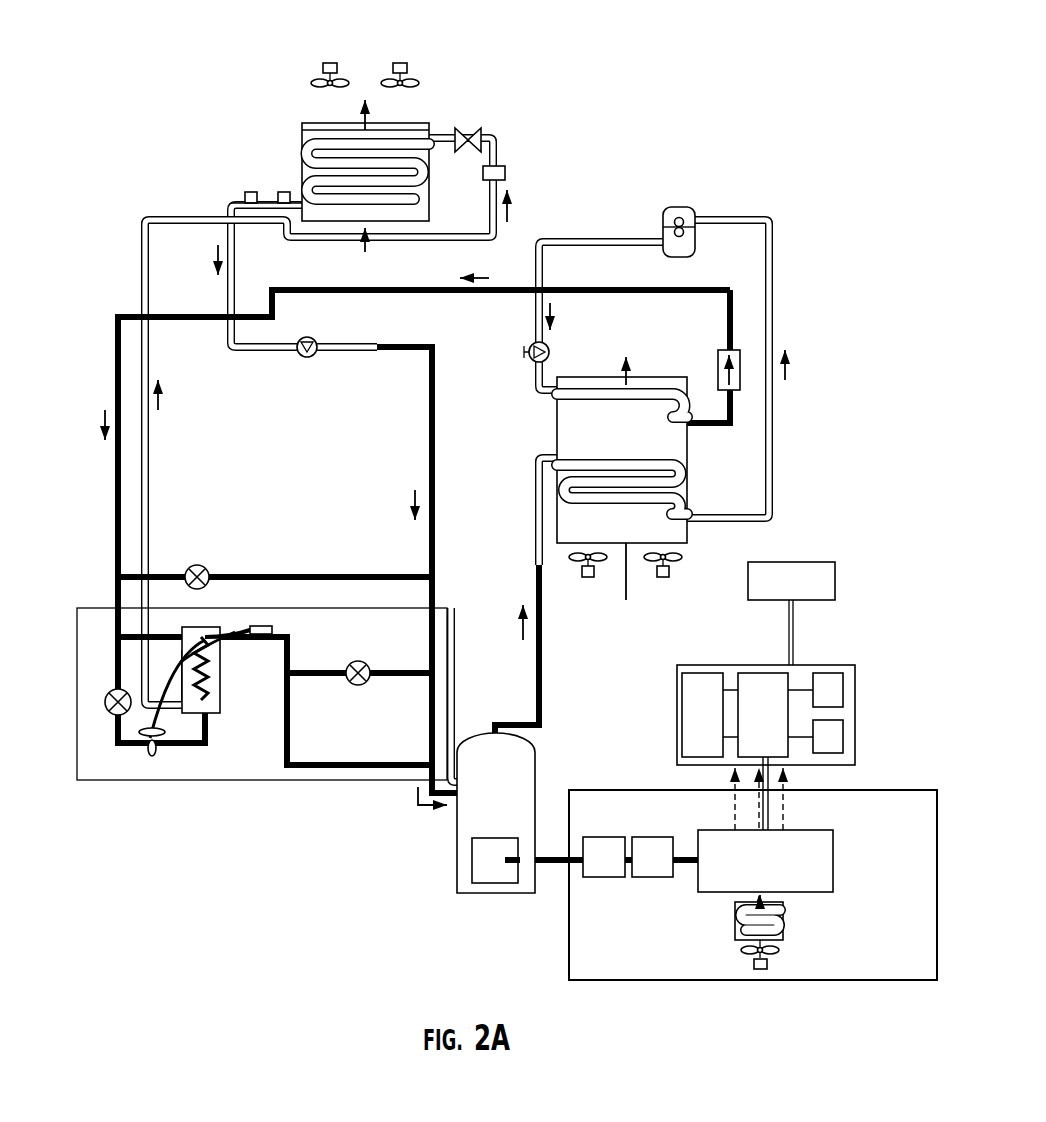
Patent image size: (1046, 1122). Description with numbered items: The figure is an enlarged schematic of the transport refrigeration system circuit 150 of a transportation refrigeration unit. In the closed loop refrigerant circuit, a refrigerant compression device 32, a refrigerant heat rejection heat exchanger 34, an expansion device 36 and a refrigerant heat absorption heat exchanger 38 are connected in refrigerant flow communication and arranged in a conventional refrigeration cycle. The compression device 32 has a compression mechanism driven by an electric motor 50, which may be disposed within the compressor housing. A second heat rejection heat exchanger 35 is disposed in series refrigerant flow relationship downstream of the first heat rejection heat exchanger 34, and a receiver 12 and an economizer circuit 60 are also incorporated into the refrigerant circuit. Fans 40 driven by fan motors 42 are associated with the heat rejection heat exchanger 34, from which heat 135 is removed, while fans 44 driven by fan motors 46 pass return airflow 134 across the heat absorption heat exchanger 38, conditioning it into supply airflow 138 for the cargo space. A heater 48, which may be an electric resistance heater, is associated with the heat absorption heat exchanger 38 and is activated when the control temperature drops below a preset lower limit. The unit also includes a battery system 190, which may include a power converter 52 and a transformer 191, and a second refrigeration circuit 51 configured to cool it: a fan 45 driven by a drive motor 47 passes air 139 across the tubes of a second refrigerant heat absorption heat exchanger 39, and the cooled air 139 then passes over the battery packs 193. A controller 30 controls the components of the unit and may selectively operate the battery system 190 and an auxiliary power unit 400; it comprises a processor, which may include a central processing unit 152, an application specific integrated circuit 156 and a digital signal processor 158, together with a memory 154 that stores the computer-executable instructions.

The receiver 12 is at (682, 207).
The controller 30 is at (858, 697).
The refrigerant compression device 32 is at (520, 768).
The refrigerant heat rejection heat exchanger 34 is at (672, 492).
The second heat rejection heat exchanger 35 is at (566, 405).
The expansion device 36 is at (469, 128).
The refrigerant heat absorption heat exchanger 38 is at (310, 163).
The second refrigerant heat absorption heat exchanger 39 is at (737, 920).
The fan 40 is at (575, 560).
The fan motor 42 is at (588, 577).
The fan 44 is at (328, 88).
The fan 45 is at (740, 950).
The fan motor 46 is at (332, 63).
The drive motor 47 is at (768, 963).
The heater 48 is at (302, 134).
The electric motor 50 is at (493, 852).
The second refrigeration circuit 51 is at (770, 925).
The power converter 52 is at (655, 838).
The economizer circuit 60 is at (77, 662).
The return airflow 134 is at (368, 232).
The heat 135 is at (629, 358).
The supply airflow 138 is at (367, 100).
The air 139 is at (790, 785).
The transport refrigeration system circuit 150 is at (90, 225).
The central processing unit 152 is at (760, 680).
The memory 154 is at (682, 690).
The application specific integrated circuit 156 is at (828, 685).
The digital signal processor 158 is at (833, 744).
The battery system 190 is at (940, 797).
The transformer 191 is at (610, 838).
The battery packs 193 is at (833, 850).
The auxiliary power unit 400 is at (840, 578).